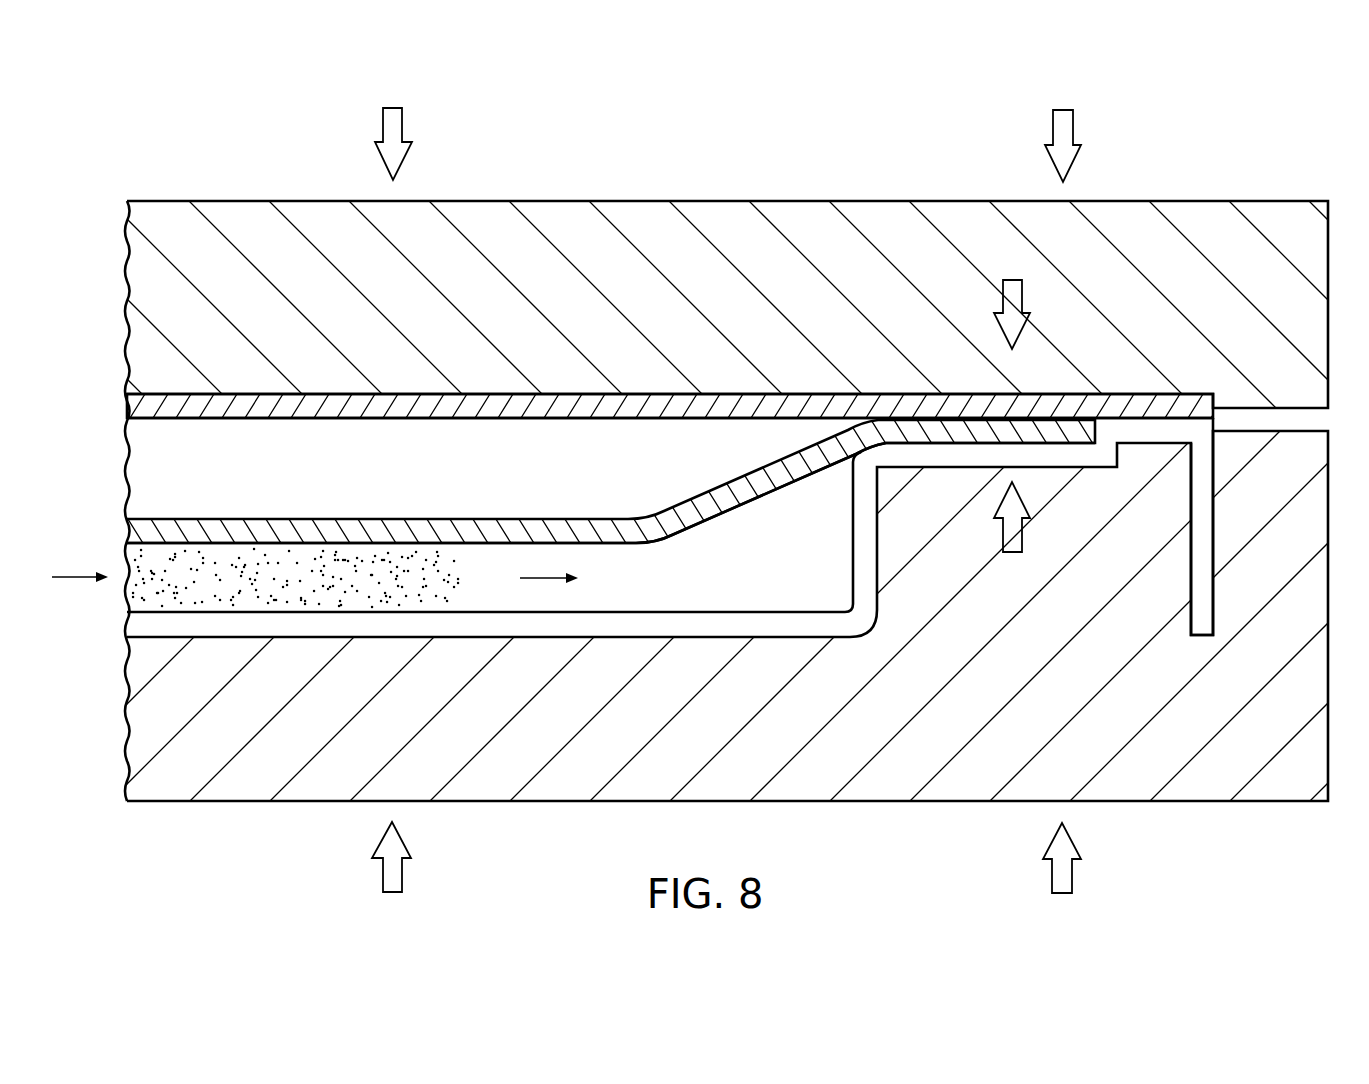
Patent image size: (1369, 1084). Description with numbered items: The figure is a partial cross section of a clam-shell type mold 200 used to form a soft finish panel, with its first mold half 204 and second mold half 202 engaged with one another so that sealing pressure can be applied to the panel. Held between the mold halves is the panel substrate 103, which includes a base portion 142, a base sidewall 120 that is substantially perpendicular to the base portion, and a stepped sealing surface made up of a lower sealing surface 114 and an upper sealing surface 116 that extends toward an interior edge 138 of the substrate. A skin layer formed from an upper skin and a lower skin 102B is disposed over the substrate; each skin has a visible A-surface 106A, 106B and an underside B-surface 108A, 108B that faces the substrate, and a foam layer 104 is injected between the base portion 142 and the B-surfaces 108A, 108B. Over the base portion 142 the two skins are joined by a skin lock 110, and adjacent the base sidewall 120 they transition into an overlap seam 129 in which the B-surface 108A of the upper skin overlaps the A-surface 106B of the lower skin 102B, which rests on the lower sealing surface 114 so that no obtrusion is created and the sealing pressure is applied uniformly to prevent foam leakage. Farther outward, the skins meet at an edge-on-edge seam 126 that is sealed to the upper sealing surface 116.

The mold 200 is at (718, 177).
The second mold half 202 is at (1328, 222).
The first mold half 204 is at (1328, 802).
The panel substrate 103 is at (164, 641).
The foam layer 104 is at (128, 592).
The skin lock 110 is at (115, 393).
The A-surface of upper skin 106A is at (627, 394).
The B-surface of upper skin 108A is at (570, 419).
The A-surface of lower skin 106B is at (366, 518).
The B-surface of lower skin 108B is at (447, 548).
The lower skin 102B is at (494, 548).
The base portion 142 is at (647, 637).
The base sidewall 120 is at (878, 573).
The lower sealing surface 114 is at (1049, 432).
The upper sealing surface 116 is at (1140, 408).
The edge 138 is at (1215, 552).
The overlap seam 129 is at (1097, 393).
The edge-on-edge seam 126 is at (1098, 393).